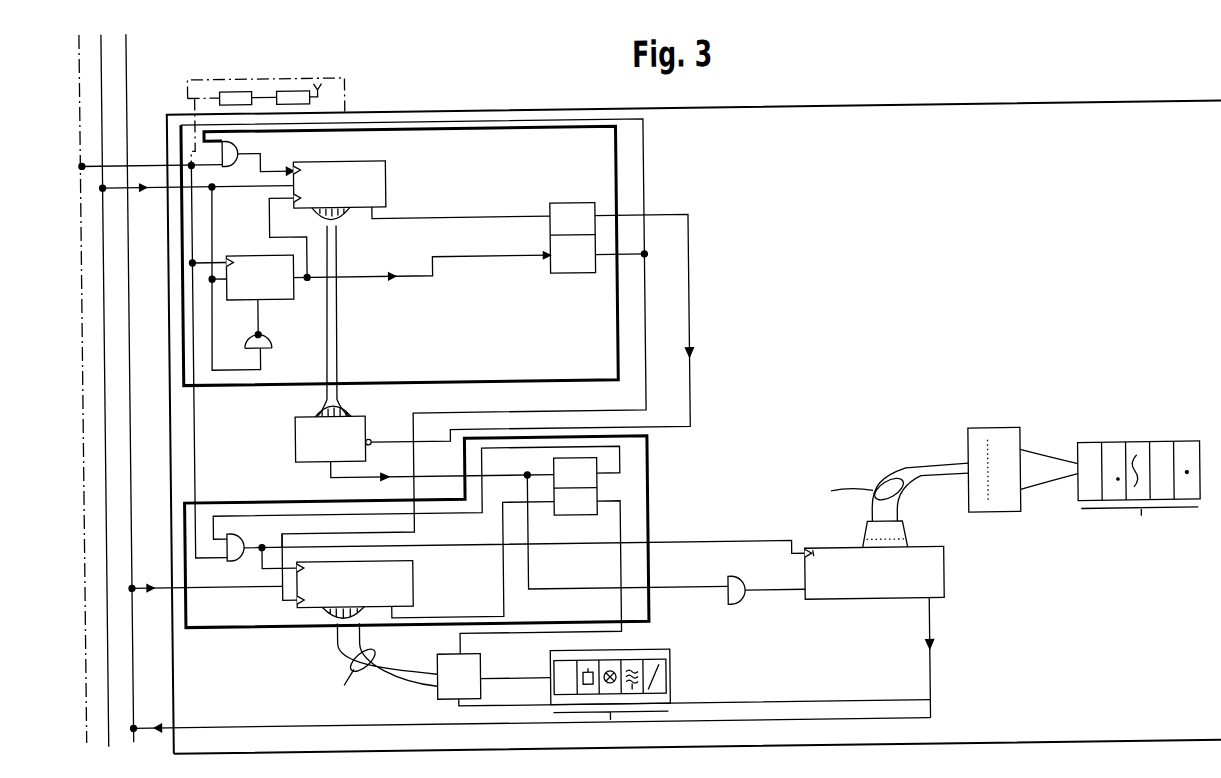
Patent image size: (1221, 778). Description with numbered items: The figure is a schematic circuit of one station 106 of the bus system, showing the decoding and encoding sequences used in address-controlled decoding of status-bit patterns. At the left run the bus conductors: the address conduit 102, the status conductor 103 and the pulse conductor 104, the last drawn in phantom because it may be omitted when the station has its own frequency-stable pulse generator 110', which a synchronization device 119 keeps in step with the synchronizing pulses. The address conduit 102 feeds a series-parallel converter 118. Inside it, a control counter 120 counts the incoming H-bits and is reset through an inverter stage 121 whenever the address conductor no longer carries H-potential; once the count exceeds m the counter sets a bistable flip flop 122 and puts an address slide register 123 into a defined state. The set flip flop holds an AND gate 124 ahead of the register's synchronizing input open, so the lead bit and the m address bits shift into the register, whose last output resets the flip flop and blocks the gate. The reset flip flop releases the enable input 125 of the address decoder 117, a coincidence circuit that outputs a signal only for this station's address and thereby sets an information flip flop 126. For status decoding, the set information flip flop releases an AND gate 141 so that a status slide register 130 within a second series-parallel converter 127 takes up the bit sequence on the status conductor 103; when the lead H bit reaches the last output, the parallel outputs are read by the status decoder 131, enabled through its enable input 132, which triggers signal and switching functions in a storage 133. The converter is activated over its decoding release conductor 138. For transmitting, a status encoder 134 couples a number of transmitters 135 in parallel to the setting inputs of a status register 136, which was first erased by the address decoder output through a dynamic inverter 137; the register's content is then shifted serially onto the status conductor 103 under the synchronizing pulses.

The address conduit 102 is at (108, 66).
The status conductor 103 is at (131, 91).
The pulse conductor 104 is at (88, 43).
The station 106 is at (1085, 127).
The pulse generator 110' is at (335, 63).
The address decoder 117 is at (298, 431).
The series-parallel converter 118 is at (609, 154).
The synchronization device 119 is at (293, 86).
The control counter 120 is at (279, 278).
The inverter stage 121 is at (270, 331).
The bistable flip flop 122 is at (552, 234).
The address slide register 123 is at (377, 158).
The AND gate 124 is at (243, 142).
The enable input 125 is at (370, 434).
The information flip flop 126 is at (597, 488).
The series-parallel converter 127 is at (637, 463).
The status slide register 130 is at (325, 574).
The status decoder 131 is at (476, 700).
The enable input 132 is at (443, 651).
The storage 133 is at (669, 660).
The status encoder 134 is at (997, 434).
The transmitters 135 is at (1151, 451).
The status register 136 is at (943, 583).
The dynamic inverter 137 is at (739, 605).
The decoding release conductor 138 is at (328, 471).
The AND gate 141 is at (232, 528).